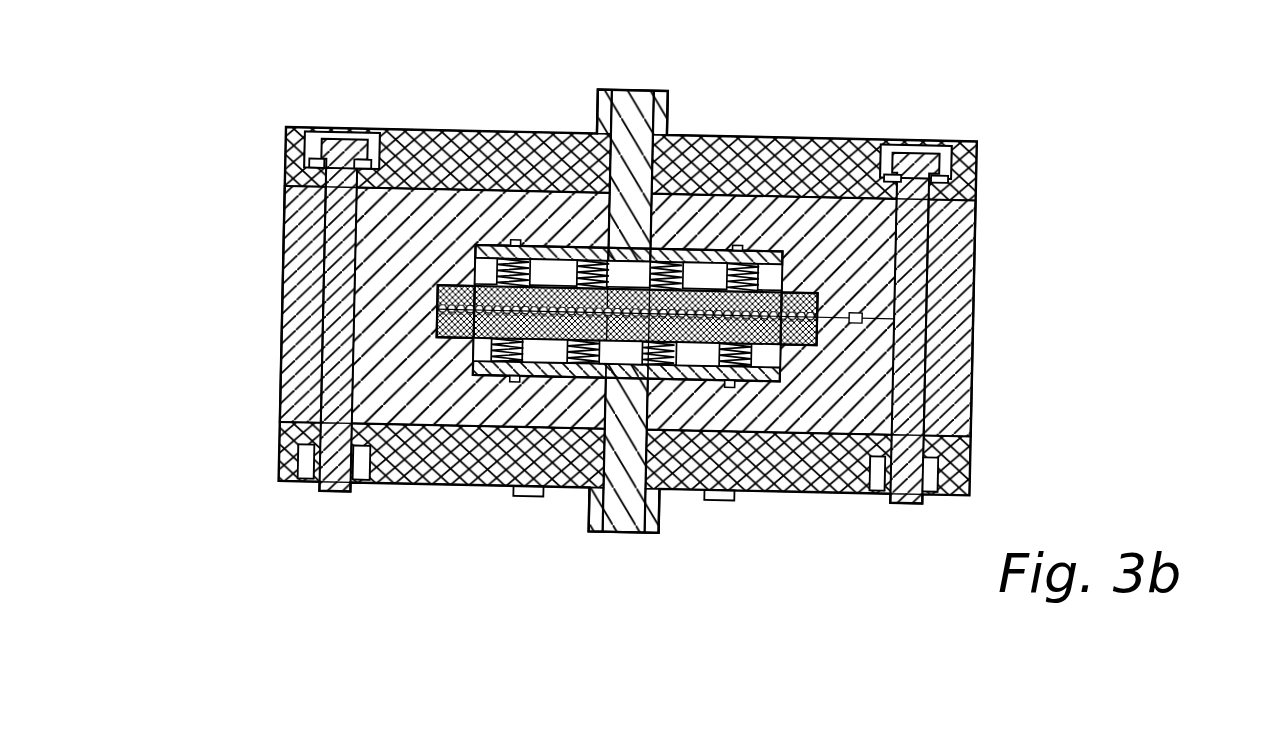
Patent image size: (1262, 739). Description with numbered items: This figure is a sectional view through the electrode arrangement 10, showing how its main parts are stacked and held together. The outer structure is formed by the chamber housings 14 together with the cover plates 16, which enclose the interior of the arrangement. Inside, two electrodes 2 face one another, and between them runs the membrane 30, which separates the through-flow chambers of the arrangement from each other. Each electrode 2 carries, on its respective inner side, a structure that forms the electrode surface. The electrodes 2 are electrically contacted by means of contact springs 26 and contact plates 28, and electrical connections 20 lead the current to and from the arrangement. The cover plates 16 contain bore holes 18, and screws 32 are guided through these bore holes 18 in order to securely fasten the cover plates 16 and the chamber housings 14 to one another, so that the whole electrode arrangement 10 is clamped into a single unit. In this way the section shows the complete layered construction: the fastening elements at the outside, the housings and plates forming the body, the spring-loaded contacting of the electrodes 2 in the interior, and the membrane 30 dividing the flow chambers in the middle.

The electrode 2 is at (437, 290).
The electrode arrangement 10 is at (1136, 88).
The chamber housing 14 is at (948, 237).
The cover plate 16 is at (780, 142).
The bore hole 18 is at (945, 150).
The electrical connection 20 is at (628, 113).
The contact spring 26 is at (685, 278).
The contact plate 28 is at (555, 245).
The membrane 30 is at (430, 304).
The screw 32 is at (283, 482).